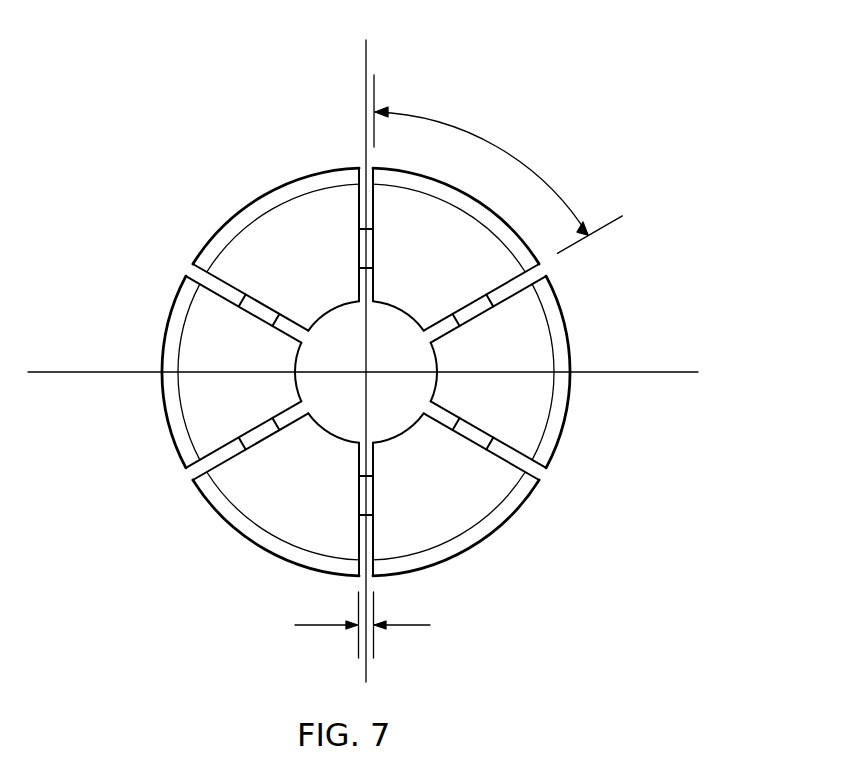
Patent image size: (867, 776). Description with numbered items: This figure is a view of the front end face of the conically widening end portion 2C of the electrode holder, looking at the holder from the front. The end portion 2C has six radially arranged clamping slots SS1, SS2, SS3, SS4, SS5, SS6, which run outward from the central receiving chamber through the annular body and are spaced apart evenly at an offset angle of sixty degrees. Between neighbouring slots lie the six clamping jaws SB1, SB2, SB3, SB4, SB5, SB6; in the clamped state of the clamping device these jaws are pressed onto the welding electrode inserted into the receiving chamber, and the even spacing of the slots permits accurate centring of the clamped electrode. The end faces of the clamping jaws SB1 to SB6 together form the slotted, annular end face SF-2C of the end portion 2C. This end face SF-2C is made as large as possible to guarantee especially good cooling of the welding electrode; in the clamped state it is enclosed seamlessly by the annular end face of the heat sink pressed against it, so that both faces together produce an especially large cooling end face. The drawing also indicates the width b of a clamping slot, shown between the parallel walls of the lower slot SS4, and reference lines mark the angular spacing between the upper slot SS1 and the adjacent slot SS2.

The end portion 2C is at (628, 92).
The end face SF-2C is at (504, 532).
The clamping jaw SB1 is at (449, 257).
The clamping jaw SB2 is at (492, 372).
The clamping jaw SB3 is at (449, 486).
The clamping jaw SB4 is at (283, 486).
The clamping jaw SB5 is at (239, 372).
The clamping jaw SB6 is at (283, 257).
The clamping slot SS1 is at (361, 167).
The clamping slot SS2 is at (544, 271).
The clamping slot SS3 is at (543, 474).
The clamping slot SS4 is at (371, 577).
The clamping slot SS5 is at (188, 473).
The clamping slot SS6 is at (188, 270).
The slot width b is at (362, 625).